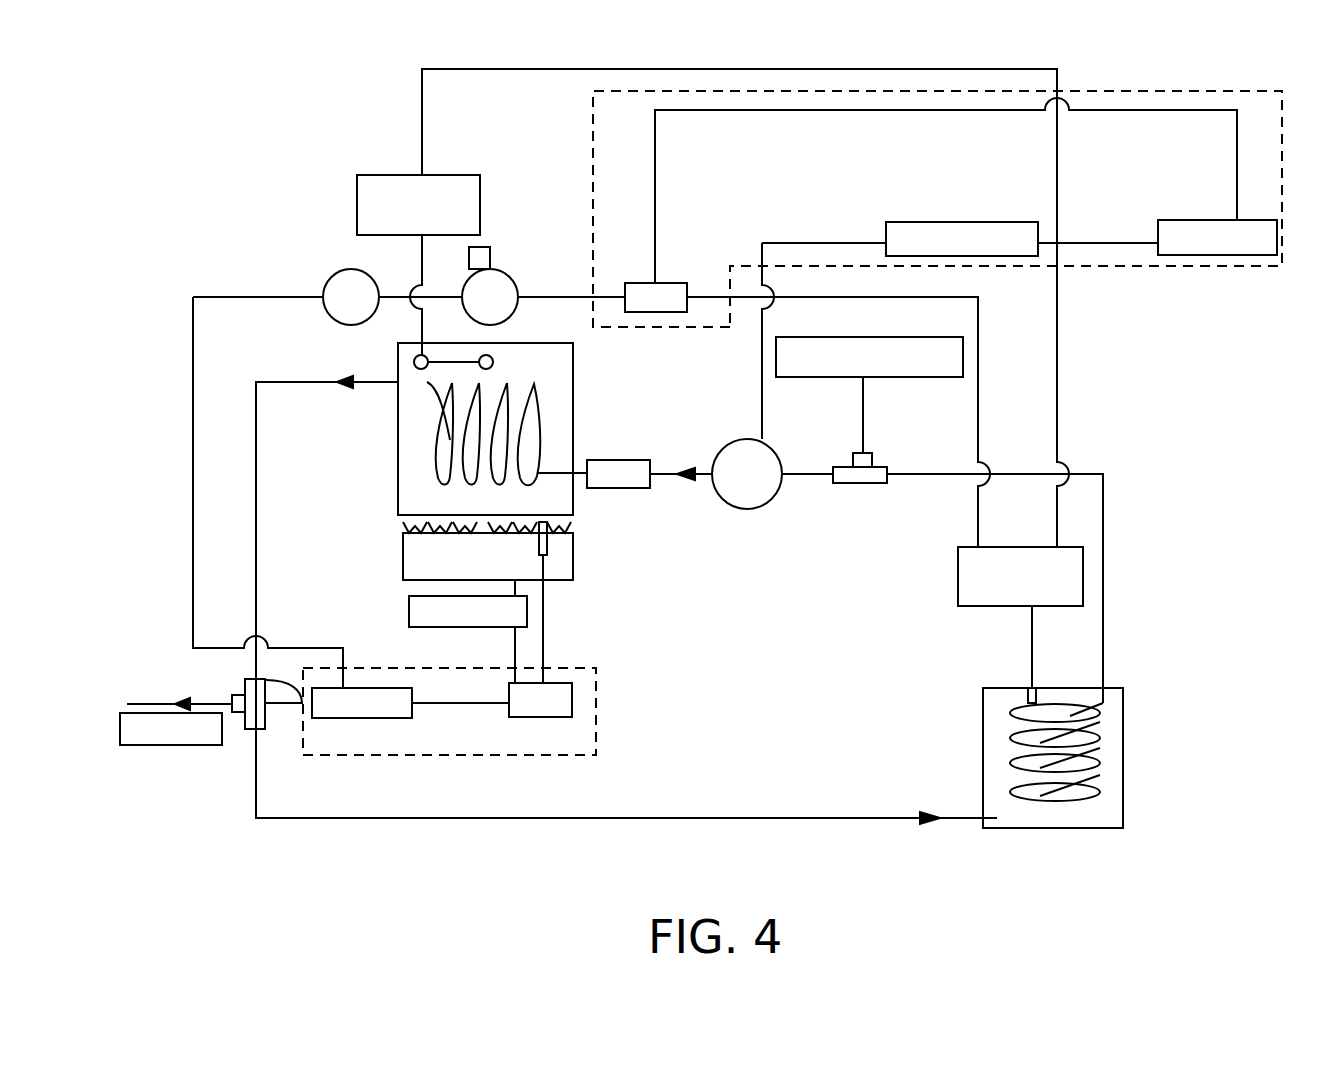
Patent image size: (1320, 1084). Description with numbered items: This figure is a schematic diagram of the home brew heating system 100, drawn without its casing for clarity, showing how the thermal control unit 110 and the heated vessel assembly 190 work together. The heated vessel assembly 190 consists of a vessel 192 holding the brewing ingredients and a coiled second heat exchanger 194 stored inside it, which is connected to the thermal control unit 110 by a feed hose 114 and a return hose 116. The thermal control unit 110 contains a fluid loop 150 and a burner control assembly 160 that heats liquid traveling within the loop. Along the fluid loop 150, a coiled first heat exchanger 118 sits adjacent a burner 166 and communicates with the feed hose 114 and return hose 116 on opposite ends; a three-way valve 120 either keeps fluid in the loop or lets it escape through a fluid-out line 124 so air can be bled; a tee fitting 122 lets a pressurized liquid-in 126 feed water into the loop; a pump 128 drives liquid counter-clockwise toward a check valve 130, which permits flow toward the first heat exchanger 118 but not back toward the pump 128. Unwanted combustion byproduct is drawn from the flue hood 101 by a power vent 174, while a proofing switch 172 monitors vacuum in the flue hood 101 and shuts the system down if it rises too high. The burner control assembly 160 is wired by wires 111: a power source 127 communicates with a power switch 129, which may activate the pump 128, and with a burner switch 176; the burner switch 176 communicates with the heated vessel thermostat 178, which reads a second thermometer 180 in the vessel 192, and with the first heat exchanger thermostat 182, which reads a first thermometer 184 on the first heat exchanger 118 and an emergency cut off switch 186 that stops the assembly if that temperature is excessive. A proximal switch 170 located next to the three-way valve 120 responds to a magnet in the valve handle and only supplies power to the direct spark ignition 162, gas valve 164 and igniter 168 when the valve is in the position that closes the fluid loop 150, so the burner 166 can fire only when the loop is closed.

The home brew heating system 100 is at (249, 106).
The thermal control unit 110 is at (220, 211).
The flue hood 101 is at (573, 400).
The wires 111 is at (653, 183).
The feed hose 114 is at (287, 382).
The return hose 116 is at (1090, 473).
The first heat exchanger 118 is at (428, 463).
The three-way valve 120 is at (262, 720).
The tee fitting 122 is at (860, 483).
The fluid-out line 124 is at (152, 704).
The pressurized liquid-in 126 is at (863, 425).
The power source 127 is at (1205, 220).
The pump 128 is at (745, 509).
The power switch 129 is at (940, 222).
The check valve 130 is at (618, 460).
The fluid loop 150 is at (699, 846).
The burner control assembly 160 is at (1192, 81).
The direct spark ignition 162 is at (545, 717).
The gas valve 164 is at (409, 613).
The burner 166 is at (403, 557).
The igniter 168 is at (573, 550).
The proximal switch 170 is at (368, 718).
The proofing switch 172 is at (331, 277).
The power vent 174 is at (510, 277).
The burner switch 176 is at (673, 283).
The heated vessel thermostat 178 is at (958, 580).
The second thermometer 180 is at (1037, 698).
The first heat exchanger thermostat 182 is at (382, 175).
The first thermometer 184 is at (414, 362).
The emergency cut off switch 186 is at (493, 362).
The heated vessel assembly 190 is at (1172, 619).
The vessel 192 is at (1123, 812).
The second heat exchanger 194 is at (1085, 738).